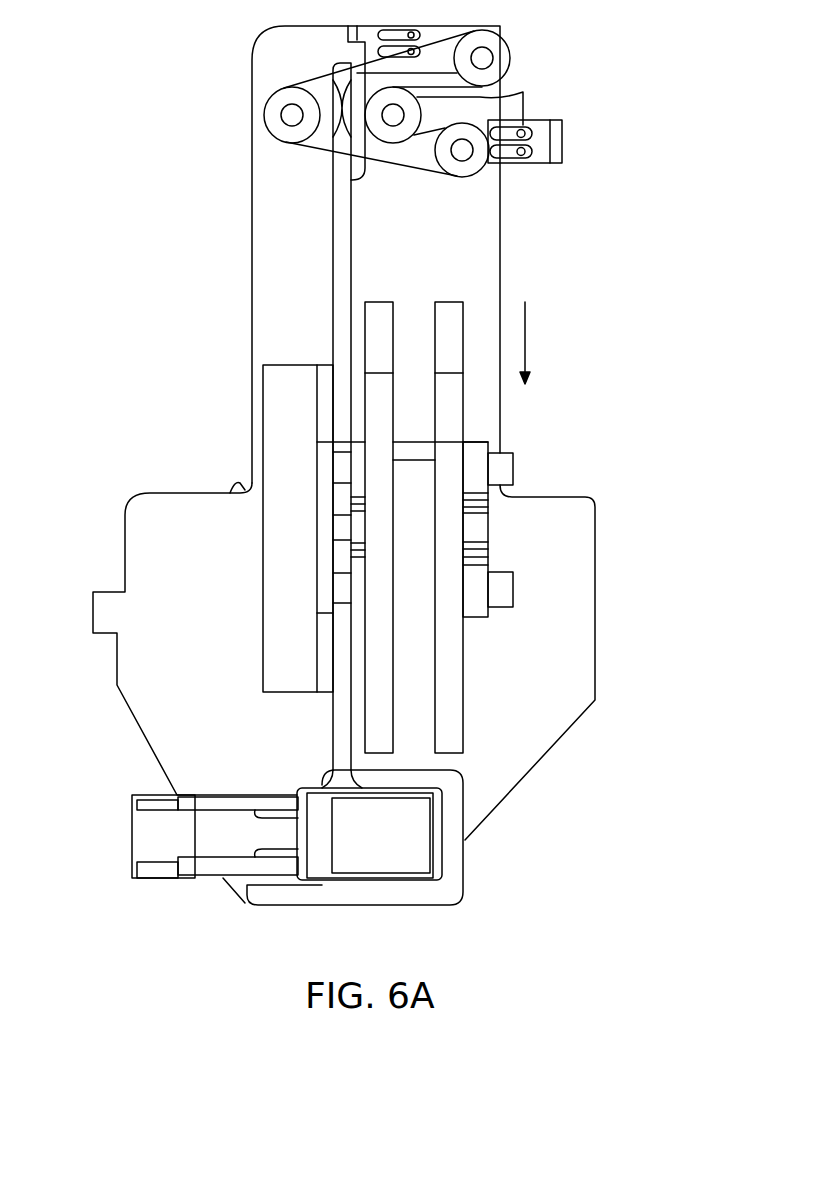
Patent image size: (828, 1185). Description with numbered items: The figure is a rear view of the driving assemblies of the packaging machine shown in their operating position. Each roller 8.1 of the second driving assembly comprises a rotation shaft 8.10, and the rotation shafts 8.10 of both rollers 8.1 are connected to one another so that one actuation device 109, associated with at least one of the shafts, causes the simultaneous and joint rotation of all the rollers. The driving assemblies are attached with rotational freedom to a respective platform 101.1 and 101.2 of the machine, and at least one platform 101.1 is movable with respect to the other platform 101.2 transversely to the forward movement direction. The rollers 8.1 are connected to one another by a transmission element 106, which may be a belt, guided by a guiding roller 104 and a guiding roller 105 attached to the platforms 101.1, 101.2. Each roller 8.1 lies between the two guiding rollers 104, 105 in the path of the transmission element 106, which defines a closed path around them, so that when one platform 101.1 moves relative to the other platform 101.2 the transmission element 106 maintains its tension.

The roller 8.1 is at (245, 108).
The rotation shaft 8.10 is at (292, 115).
The guiding roller 104 is at (482, 58).
The guiding roller 105 is at (490, 160).
The transmission element 106 is at (362, 168).
The platform 101.1 is at (287, 245).
The platform 101.2 is at (545, 633).
The actuation device 109 is at (418, 830).